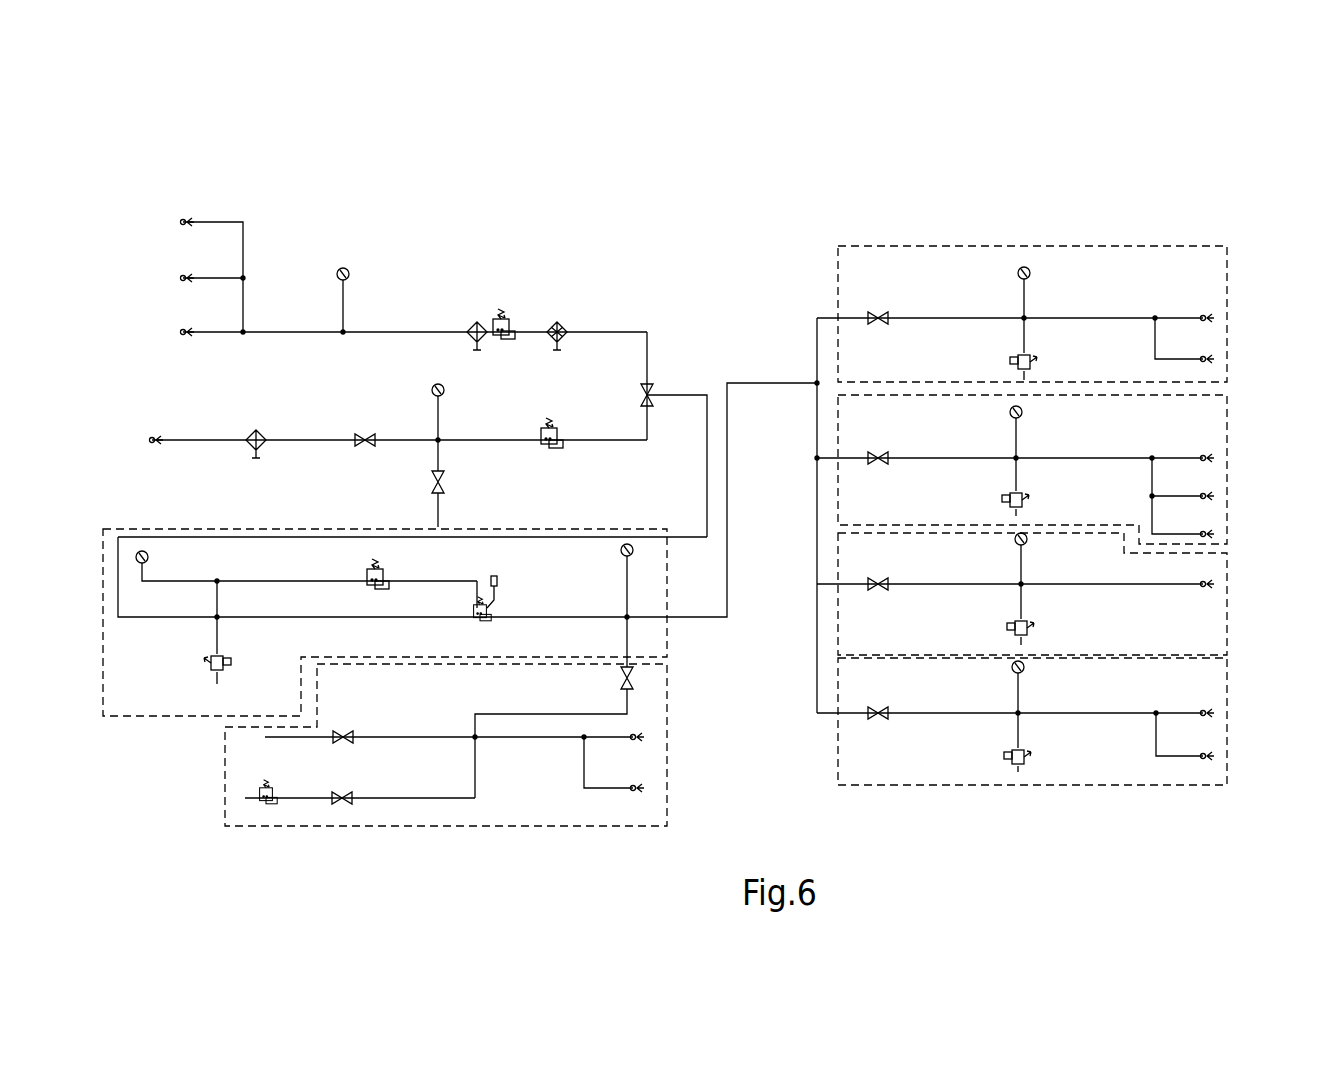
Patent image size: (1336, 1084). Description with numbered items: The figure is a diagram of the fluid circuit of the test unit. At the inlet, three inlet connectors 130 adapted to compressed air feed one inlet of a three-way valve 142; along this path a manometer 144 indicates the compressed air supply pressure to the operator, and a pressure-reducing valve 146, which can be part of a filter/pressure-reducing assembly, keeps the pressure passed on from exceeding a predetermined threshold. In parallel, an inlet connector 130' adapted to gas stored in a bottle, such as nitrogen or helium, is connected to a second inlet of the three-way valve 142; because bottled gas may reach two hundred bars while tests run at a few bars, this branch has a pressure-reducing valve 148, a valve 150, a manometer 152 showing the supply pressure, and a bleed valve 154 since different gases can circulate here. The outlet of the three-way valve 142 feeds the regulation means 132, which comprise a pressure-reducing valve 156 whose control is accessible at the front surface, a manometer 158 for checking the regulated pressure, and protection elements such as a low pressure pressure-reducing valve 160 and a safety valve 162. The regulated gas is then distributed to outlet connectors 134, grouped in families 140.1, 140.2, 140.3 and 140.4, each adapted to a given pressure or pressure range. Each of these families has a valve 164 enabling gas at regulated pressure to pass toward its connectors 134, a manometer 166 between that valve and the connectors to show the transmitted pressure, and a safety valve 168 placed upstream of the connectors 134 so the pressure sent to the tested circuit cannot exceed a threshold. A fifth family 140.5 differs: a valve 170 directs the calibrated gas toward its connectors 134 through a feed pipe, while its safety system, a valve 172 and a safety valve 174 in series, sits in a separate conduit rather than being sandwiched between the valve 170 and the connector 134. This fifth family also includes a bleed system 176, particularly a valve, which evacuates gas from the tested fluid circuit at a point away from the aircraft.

The inlet connector 130 is at (370, 277).
The inlet connector 130' is at (368, 426).
The regulation means 132 is at (101, 686).
The outlet connector 134 is at (1210, 318).
The family 140.1 is at (1148, 246).
The family 140.2 is at (1228, 412).
The family 140.3 is at (1230, 607).
The family 140.4 is at (1230, 697).
The fifth family 140.5 is at (440, 826).
The three-way valve 142 is at (653, 395).
The manometer 144 is at (350, 273).
The pressure-reducing valve 146 is at (512, 326).
The pressure-reducing valve 148 is at (556, 433).
The valve 150 is at (366, 436).
The manometer 152 is at (438, 384).
The bleed valve 154 is at (445, 478).
The pressure-reducing valve 156 is at (376, 568).
The manometer 158 is at (633, 553).
The low pressure pressure-reducing valve 160 is at (492, 612).
The safety valve 162 is at (210, 664).
The valve 164 is at (880, 454).
The manometer 166 is at (1022, 408).
The safety valve 168 is at (1010, 497).
The valve 170 is at (633, 678).
The valve 172 is at (342, 806).
The safety valve 174 is at (262, 806).
The bleed system 176 is at (343, 745).